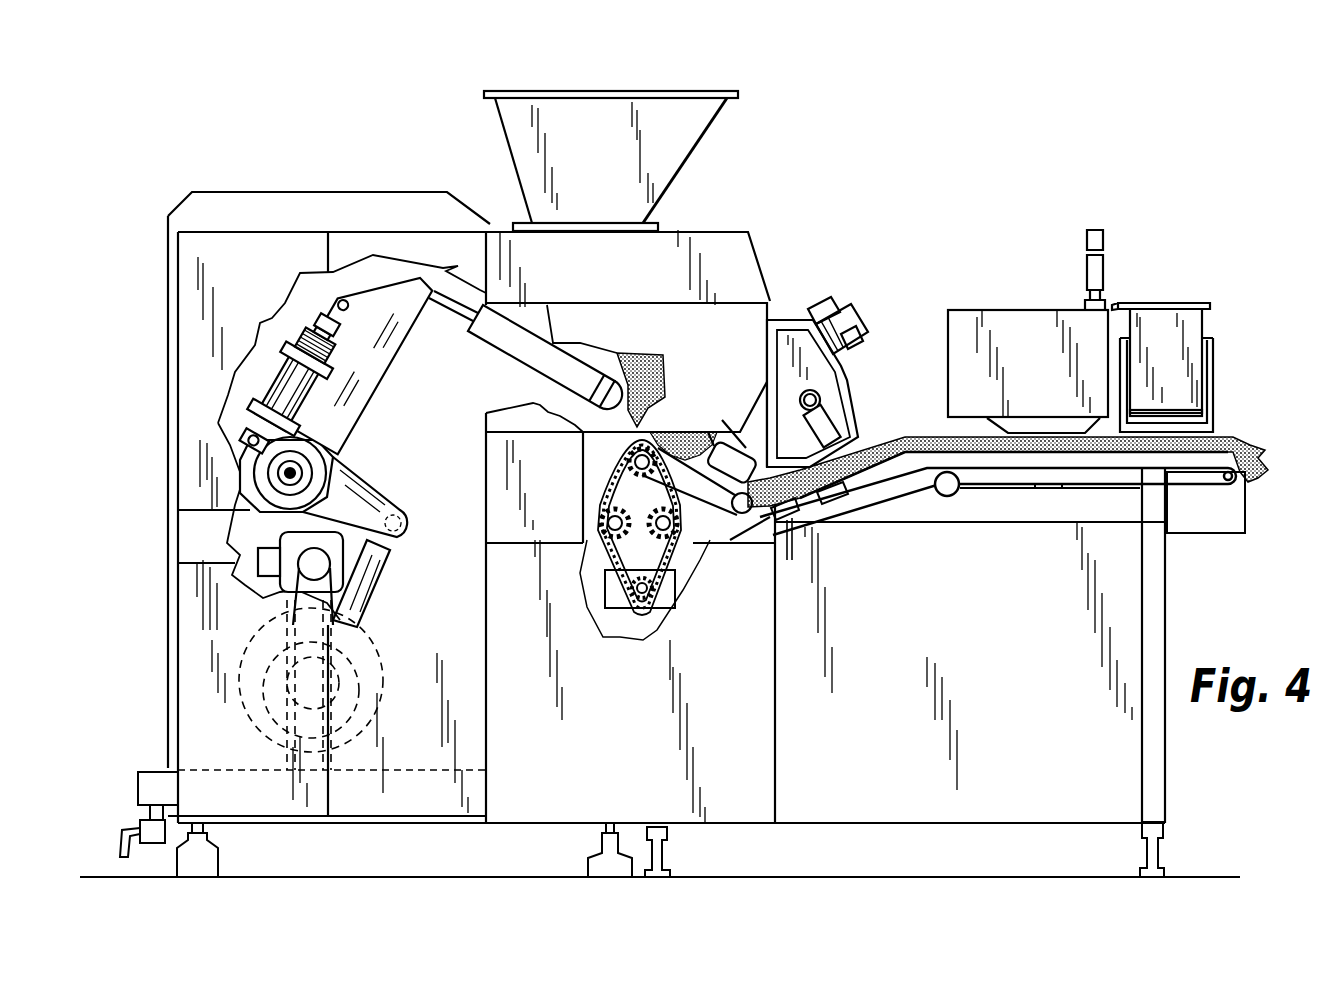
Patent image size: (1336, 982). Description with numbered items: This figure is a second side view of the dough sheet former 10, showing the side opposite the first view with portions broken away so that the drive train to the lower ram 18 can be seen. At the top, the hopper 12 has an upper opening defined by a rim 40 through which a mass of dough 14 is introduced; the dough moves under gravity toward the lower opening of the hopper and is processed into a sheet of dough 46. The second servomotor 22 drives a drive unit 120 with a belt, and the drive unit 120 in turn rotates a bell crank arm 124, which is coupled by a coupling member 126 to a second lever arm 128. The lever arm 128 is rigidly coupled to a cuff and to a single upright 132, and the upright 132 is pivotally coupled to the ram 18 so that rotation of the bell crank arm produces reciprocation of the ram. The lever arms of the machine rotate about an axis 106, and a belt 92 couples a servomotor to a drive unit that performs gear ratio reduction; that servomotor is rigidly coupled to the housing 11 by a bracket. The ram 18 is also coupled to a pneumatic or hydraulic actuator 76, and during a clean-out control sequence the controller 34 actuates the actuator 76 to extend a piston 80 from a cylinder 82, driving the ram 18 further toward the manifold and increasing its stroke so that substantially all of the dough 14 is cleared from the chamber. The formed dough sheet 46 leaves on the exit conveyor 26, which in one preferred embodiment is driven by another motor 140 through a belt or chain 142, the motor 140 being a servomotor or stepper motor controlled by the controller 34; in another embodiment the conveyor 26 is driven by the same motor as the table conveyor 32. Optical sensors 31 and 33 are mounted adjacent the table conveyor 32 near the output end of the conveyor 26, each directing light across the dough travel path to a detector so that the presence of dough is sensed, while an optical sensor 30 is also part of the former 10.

The dough sheet former 10 is at (226, 103).
The housing 11 is at (170, 463).
The hopper 12 is at (667, 167).
The mass of dough 14 is at (633, 353).
The lower ram 18 is at (522, 356).
The second servomotor 22 is at (255, 564).
The exit conveyor 26 is at (707, 507).
The optical sensor 30 is at (823, 423).
The optical sensor 31 is at (828, 500).
The table conveyor 32 is at (1236, 466).
The optical sensor 33 is at (783, 520).
The controller 34 is at (990, 310).
The rim 40 is at (742, 94).
The sheet of dough 46 is at (1238, 435).
The actuator 76 is at (261, 381).
The piston 80 is at (316, 330).
The cylinder 82 is at (305, 337).
The belt 92 is at (302, 604).
The axis 106 is at (286, 473).
The drive unit 120 is at (250, 732).
The bell crank arm 124 is at (333, 728).
The coupling member 126 is at (373, 577).
The second lever arm 128 is at (357, 497).
The upright 132 is at (357, 400).
The motor 140 is at (613, 637).
The belt or chain 142 is at (598, 606).